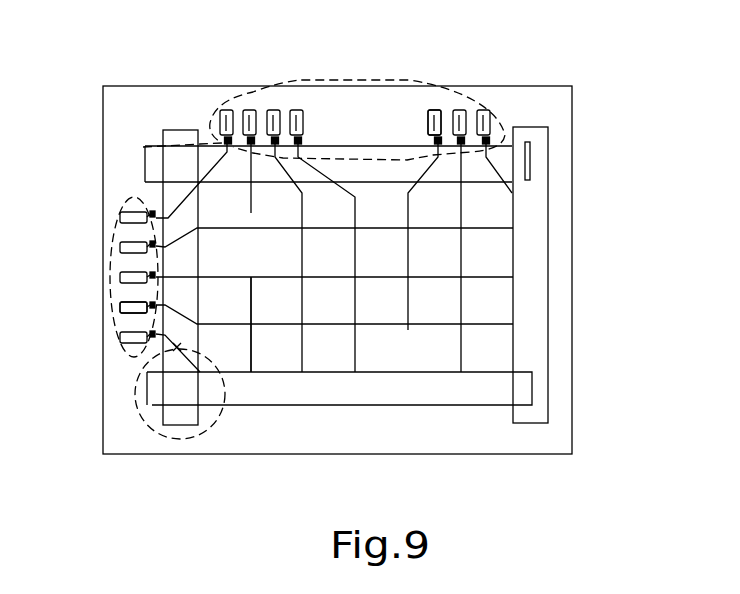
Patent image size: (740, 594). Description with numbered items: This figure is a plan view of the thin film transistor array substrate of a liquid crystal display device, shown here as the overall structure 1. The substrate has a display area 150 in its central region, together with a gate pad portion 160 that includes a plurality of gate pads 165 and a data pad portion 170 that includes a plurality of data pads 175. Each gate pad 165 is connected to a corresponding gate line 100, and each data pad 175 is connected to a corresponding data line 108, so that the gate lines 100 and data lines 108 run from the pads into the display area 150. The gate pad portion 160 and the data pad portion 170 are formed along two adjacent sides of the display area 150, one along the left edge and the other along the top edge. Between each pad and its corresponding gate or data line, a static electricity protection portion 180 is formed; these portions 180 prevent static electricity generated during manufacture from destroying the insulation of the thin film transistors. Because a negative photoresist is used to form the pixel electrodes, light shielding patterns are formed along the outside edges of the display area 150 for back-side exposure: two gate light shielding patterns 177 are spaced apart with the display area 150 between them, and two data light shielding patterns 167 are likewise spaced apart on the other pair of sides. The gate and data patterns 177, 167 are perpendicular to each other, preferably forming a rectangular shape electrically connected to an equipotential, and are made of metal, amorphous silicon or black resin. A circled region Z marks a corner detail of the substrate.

The display device 1 is at (350, 62).
The gate line 100 is at (380, 325).
The data line 108 is at (252, 350).
The display area 150 is at (329, 316).
The gate pad portion 160 is at (110, 265).
The gate pad 165 is at (120, 305).
The data light shielding pattern 167 is at (160, 190).
The data pad portion 170 is at (407, 93).
The data pad 175 is at (440, 113).
The gate light shielding pattern 177 is at (504, 143).
The static electricity protection portion 180 is at (240, 95).
The zone Z is at (212, 427).